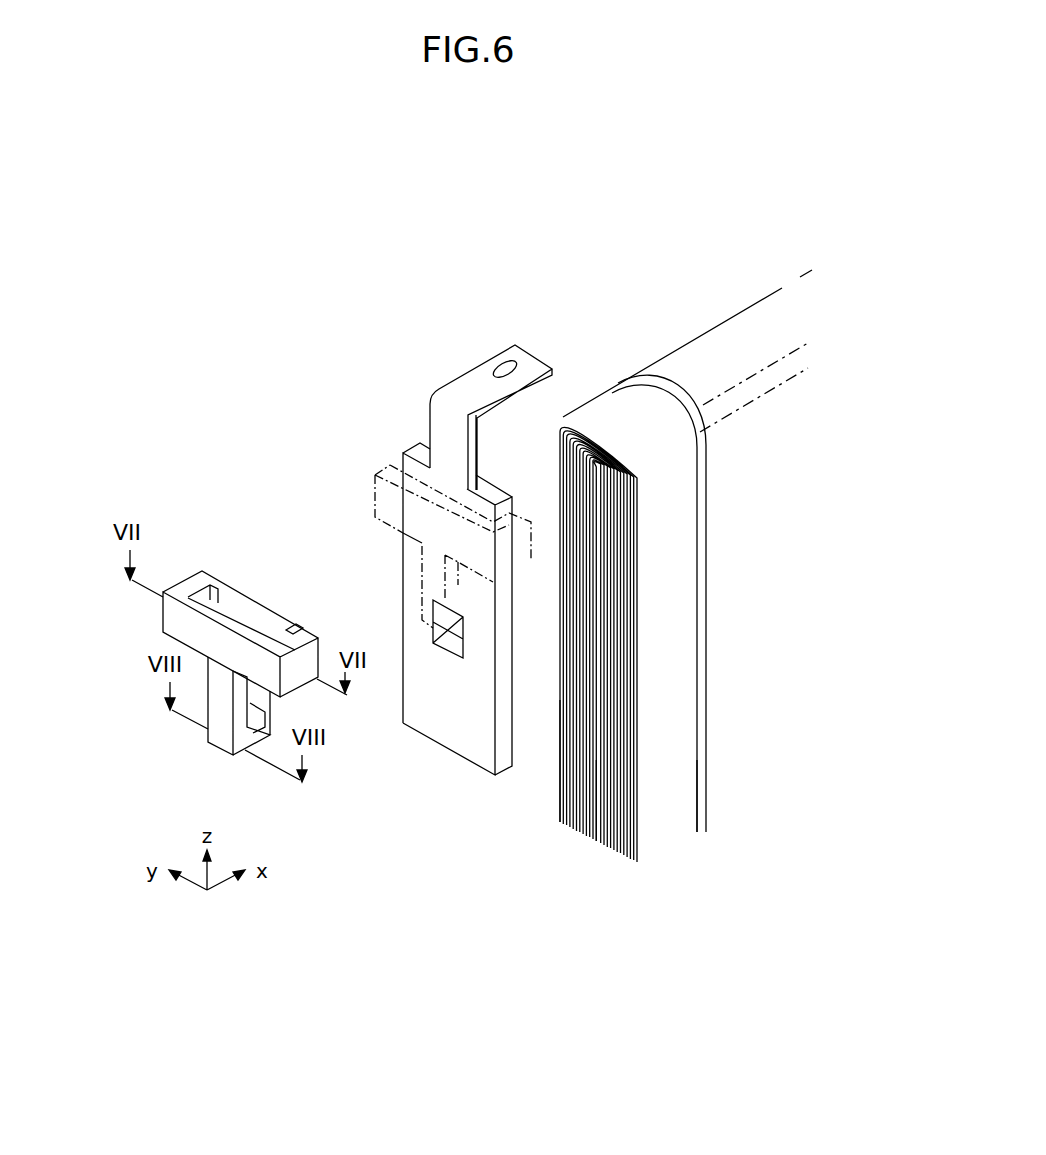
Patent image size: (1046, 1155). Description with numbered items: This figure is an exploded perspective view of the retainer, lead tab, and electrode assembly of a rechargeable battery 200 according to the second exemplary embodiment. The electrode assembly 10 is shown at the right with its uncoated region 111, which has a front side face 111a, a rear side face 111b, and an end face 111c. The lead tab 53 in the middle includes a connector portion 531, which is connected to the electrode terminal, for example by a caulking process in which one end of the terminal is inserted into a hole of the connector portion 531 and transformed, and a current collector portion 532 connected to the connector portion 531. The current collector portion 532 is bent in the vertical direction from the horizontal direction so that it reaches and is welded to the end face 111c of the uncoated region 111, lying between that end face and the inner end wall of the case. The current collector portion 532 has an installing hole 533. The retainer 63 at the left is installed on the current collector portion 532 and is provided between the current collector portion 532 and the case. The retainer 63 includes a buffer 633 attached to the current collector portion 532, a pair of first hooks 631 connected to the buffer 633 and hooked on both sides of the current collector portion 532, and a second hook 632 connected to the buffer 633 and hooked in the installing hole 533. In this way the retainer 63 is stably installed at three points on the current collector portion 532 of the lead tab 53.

The rechargeable battery 200 is at (467, 155).
The electrode assembly 10 is at (722, 312).
The uncoated region 111 is at (685, 518).
The front side face 111a is at (663, 810).
The rear side face 111b is at (558, 780).
The end face 111c is at (596, 816).
The lead tab 53 is at (435, 559).
The connector portion 531 is at (476, 382).
The current collector portion 532 is at (408, 470).
The installing hole 533 is at (459, 642).
The retainer 63 is at (201, 641).
The first hooks 631 is at (291, 641).
The second hook 632 is at (222, 745).
The buffer 633 is at (165, 618).